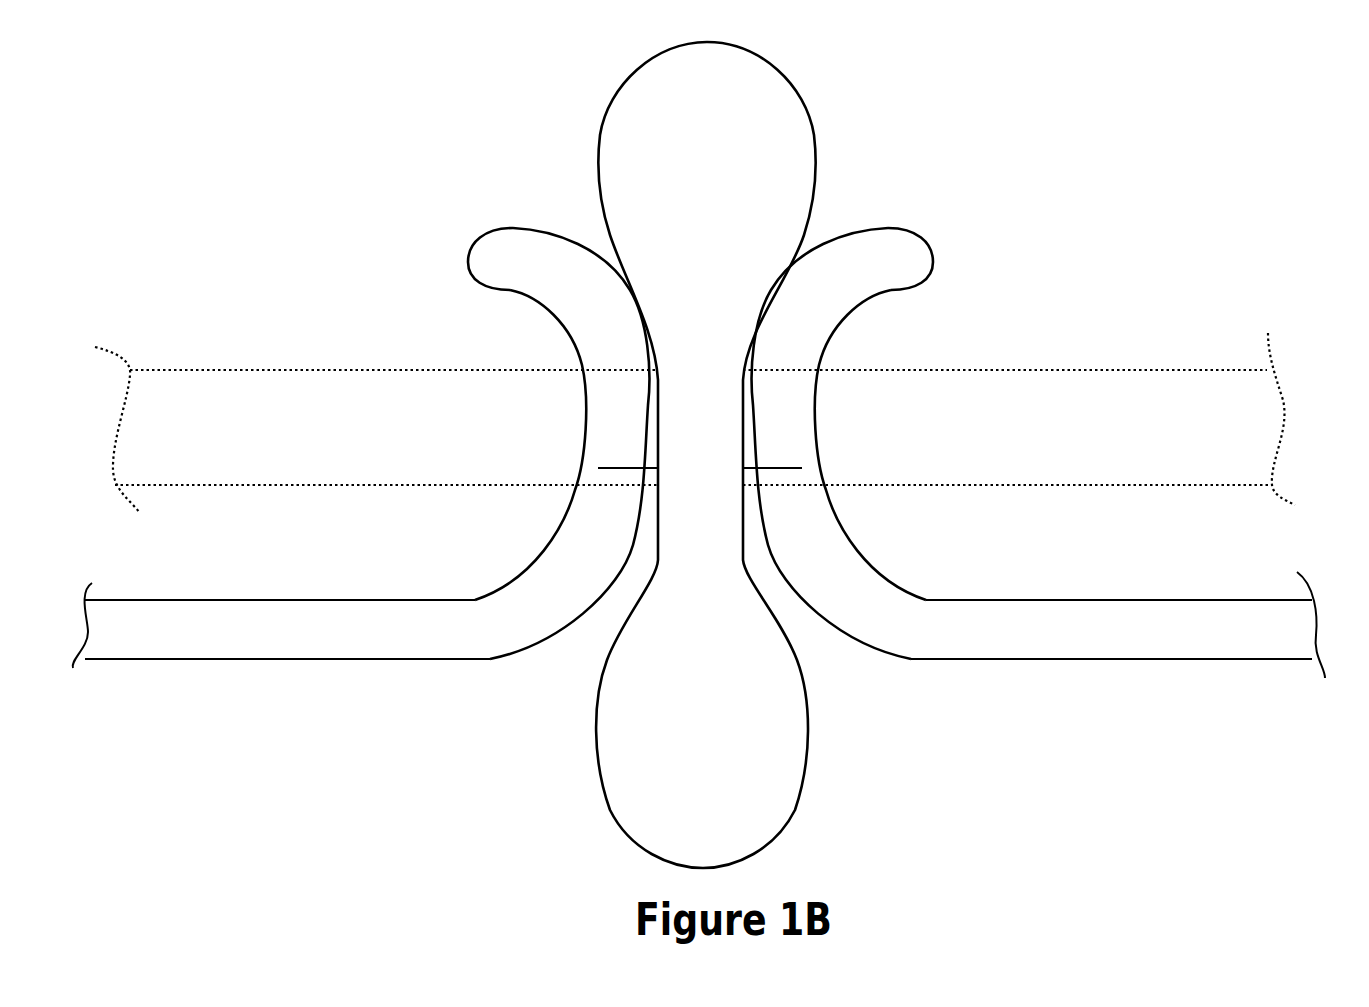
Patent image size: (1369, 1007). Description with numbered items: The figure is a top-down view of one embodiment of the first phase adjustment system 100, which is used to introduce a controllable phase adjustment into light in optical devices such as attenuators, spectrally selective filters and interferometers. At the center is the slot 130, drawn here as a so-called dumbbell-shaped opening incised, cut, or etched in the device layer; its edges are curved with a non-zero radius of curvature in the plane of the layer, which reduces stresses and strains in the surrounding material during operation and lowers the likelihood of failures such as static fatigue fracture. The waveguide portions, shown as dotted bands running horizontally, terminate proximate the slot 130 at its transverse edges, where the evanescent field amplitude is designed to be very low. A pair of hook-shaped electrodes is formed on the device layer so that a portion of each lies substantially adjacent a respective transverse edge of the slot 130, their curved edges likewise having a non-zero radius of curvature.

The phase adjustment system 100 is at (1002, 112).
The slot 130 is at (815, 163).